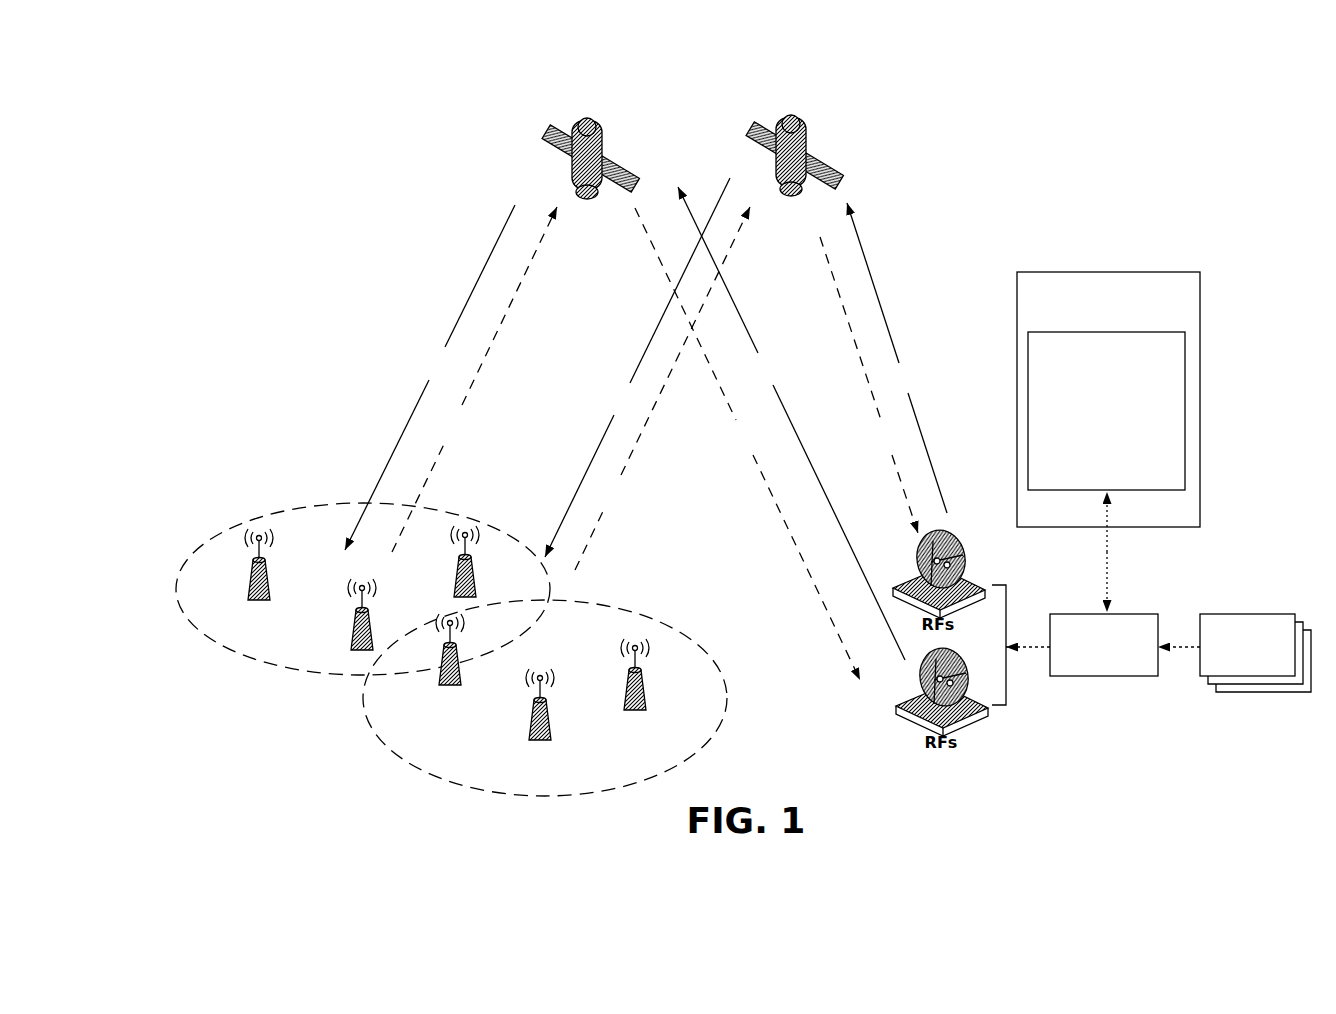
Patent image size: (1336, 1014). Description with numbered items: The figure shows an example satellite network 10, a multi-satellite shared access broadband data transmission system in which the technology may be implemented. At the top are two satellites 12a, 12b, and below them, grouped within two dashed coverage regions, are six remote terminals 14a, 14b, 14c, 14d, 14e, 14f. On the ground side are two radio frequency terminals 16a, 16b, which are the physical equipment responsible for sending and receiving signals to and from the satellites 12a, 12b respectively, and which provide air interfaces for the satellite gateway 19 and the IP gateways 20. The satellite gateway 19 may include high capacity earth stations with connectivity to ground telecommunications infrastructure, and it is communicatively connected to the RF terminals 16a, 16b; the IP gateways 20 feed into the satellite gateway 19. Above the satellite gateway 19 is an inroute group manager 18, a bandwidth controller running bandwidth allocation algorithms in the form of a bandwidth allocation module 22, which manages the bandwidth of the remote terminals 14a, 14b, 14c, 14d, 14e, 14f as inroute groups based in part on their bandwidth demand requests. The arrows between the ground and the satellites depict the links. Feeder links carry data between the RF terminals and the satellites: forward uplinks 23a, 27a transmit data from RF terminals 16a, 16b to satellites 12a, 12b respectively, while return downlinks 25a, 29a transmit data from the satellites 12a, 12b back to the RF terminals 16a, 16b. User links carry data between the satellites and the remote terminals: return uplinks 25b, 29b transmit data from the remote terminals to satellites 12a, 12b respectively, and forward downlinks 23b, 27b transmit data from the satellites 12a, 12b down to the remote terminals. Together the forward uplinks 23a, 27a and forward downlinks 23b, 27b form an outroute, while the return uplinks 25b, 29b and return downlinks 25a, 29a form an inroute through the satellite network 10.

The satellite network 10 is at (698, 80).
The satellite 12a is at (617, 158).
The satellite 12b is at (813, 150).
The remote terminal 14a is at (259, 583).
The remote terminal 14b is at (343, 619).
The remote terminal 14c is at (447, 562).
The remote terminal 14d is at (447, 666).
The remote terminal 14e is at (537, 720).
The remote terminal 14f is at (630, 690).
The radio frequency terminal 16a is at (972, 584).
The radio frequency terminal 16b is at (916, 716).
The inroute group manager 18 is at (1108, 399).
The satellite gateway 19 is at (1104, 645).
The IP gateways 20 is at (1255, 653).
The bandwidth allocation module 22 is at (1106, 411).
The forward uplink 23a is at (791, 423).
The forward downlink 23b is at (430, 377).
The return downlink 25a is at (747, 444).
The return uplink 25b is at (474, 379).
The forward uplink 27a is at (897, 358).
The forward downlink 27b is at (637, 367).
The return downlink 29a is at (869, 385).
The return uplink 29b is at (662, 388).